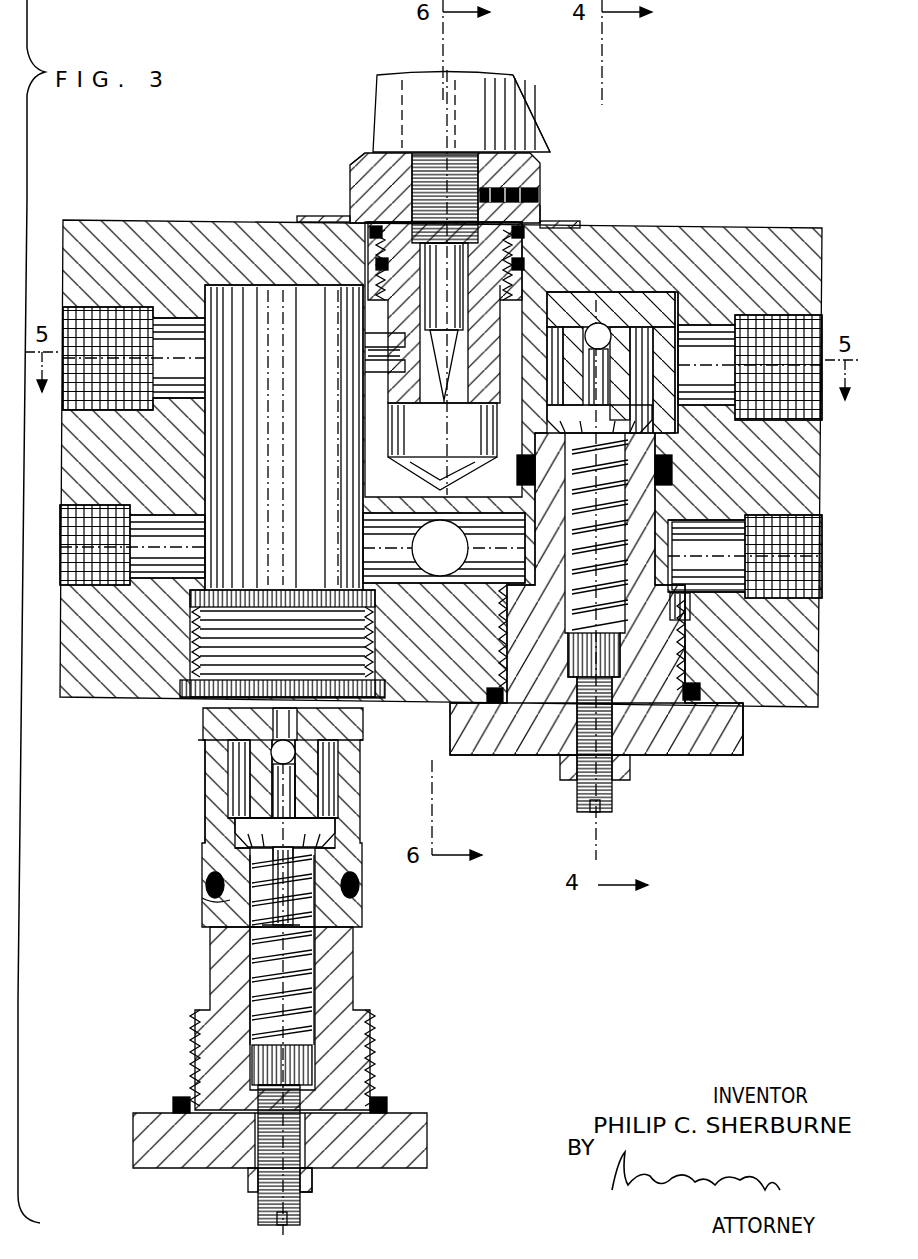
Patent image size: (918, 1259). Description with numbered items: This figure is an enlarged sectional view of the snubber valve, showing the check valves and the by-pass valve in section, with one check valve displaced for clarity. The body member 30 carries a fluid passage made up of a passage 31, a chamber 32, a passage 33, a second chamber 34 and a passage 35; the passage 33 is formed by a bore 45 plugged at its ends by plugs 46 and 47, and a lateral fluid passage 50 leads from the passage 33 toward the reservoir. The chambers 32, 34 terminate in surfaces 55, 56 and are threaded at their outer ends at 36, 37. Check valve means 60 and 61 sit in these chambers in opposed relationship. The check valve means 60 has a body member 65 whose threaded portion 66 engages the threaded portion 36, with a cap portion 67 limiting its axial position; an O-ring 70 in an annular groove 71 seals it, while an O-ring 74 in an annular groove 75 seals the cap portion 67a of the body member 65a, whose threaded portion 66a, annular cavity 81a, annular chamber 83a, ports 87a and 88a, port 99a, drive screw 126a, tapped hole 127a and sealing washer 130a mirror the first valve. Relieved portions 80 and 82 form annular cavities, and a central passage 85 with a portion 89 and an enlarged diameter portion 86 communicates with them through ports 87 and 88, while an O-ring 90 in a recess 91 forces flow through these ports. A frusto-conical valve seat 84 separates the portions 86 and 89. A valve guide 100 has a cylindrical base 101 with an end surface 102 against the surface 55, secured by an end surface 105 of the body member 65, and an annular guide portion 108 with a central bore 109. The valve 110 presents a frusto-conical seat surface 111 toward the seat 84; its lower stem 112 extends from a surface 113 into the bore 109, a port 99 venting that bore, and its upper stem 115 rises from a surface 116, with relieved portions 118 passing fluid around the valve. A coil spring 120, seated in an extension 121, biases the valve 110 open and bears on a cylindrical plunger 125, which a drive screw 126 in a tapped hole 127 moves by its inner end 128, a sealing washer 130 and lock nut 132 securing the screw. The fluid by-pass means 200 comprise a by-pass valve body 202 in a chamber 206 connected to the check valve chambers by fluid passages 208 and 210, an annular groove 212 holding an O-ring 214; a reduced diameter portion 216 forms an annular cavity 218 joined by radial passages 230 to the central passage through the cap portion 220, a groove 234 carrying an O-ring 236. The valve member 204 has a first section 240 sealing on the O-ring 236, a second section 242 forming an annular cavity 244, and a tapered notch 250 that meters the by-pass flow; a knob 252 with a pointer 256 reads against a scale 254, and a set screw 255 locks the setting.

The body member 30 is at (790, 708).
The passage 31 is at (188, 330).
The cavity or chamber 32 is at (250, 438).
The passage 33 is at (487, 565).
The second cavity or chamber 34 is at (690, 340).
The passage 35 is at (715, 340).
The threaded portion 36 is at (192, 640).
The threaded portion 37 is at (690, 632).
The bore 45 is at (150, 570).
The plug 46 is at (62, 530).
The plug 47 is at (822, 540).
The lateral fluid passage 50 is at (440, 575).
The surface 55 is at (275, 297).
The surface 56 is at (620, 295).
The check valve means 60 is at (279, 967).
The check valve means 61 is at (540, 763).
The body member 65 is at (345, 968).
The body member 65a is at (500, 742).
The threaded portion 66 is at (192, 1100).
The threaded portion 66a is at (492, 688).
The cap portion 67 is at (405, 1160).
The cap portion 67a is at (740, 745).
The O-ring 70 is at (176, 1100).
The annular groove 71 is at (185, 698).
The O-ring 74 is at (692, 690).
The annular groove 75 is at (695, 703).
The relieved portion 80 is at (688, 597).
The annular cavity 81a is at (685, 520).
The relieved portion 82 is at (670, 434).
The annular chamber 83a is at (652, 416).
The frusto-conical valve seat 84 is at (293, 876).
The central passage 85 is at (265, 866).
The enlarged diameter portion 86 is at (330, 756).
The port 87 is at (265, 965).
The port 87a is at (615, 545).
The port 88 is at (328, 768).
The port 88a is at (645, 372).
The portion 89 is at (260, 926).
The O-ring 90 is at (206, 885).
The recess 91 is at (215, 906).
The port 99 is at (294, 748).
The port 99a is at (598, 322).
The valve guide 100 is at (250, 750).
The cylindrical base 101 is at (215, 736).
The end surface 102 is at (225, 716).
The end surface 105 is at (258, 775).
The annular guide portion 108 is at (240, 820).
The central bore 109 is at (297, 722).
The valve 110 is at (305, 838).
The frusto-conical seat surface 111 is at (322, 858).
The lower stem 112 is at (292, 800).
The surface 113 is at (515, 412).
The upper stem 115 is at (320, 920).
The surface 116 is at (328, 880).
The relieved portions 118 is at (325, 825).
The coil spring 120 is at (265, 990).
The extension 121 is at (262, 1022).
The cylindrical plunger 125 is at (300, 1060).
The drive screw 126 is at (292, 1216).
The drive screw 126a is at (600, 812).
The tapped hole 127 is at (258, 1140).
The tapped hole 127a is at (620, 768).
The inner end 128 is at (292, 1082).
The sealing washer 130 is at (247, 1175).
The sealing washer 130a is at (625, 780).
The lock nut 132 is at (312, 1180).
The fluid by-pass means 200 is at (458, 265).
The by-pass valve body 202 is at (372, 157).
The valve member 204 is at (345, 215).
The cavity or chamber 206 is at (430, 470).
The fluid passage 208 is at (405, 338).
The fluid passage 210 is at (466, 462).
The annular groove 212 is at (512, 258).
The O-ring 214 is at (542, 214).
The reduced diameter portion 216 is at (400, 353).
The annular cavity 218 is at (405, 366).
The cap portion 220 is at (545, 175).
The radial passages 230 is at (455, 332).
The groove 234 is at (505, 300).
The O-ring 236 is at (508, 282).
The first section 240 is at (425, 268).
The second section 242 is at (440, 380).
The annular cavity 244 is at (462, 450).
The notch 250 is at (442, 430).
The knob 252 is at (490, 90).
The scale 254 is at (575, 224).
The set screw 255 is at (545, 192).
The pointer 256 is at (530, 130).